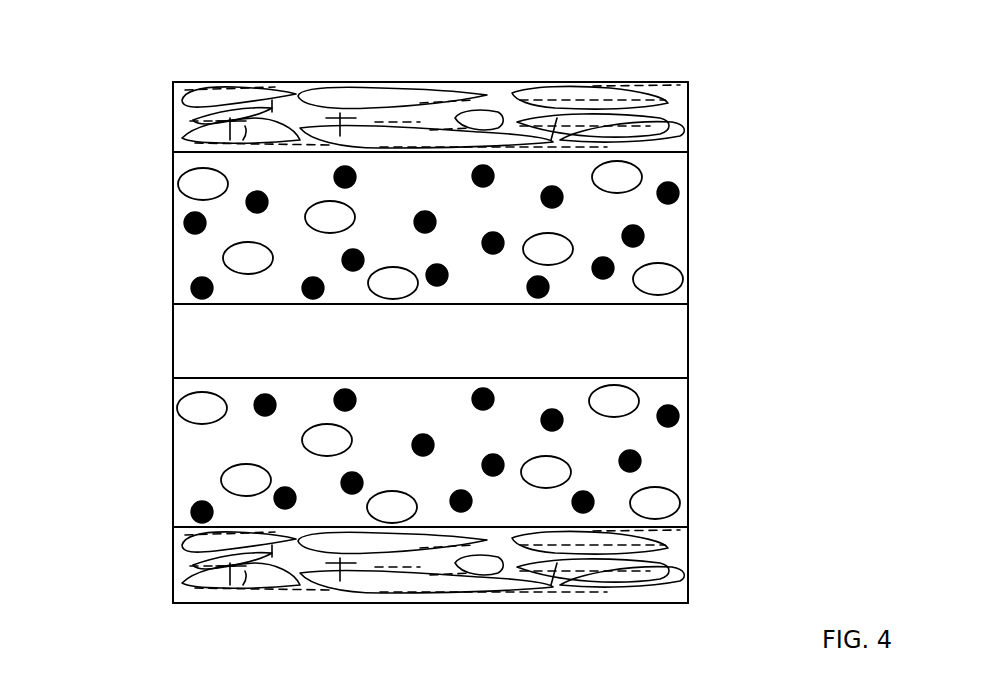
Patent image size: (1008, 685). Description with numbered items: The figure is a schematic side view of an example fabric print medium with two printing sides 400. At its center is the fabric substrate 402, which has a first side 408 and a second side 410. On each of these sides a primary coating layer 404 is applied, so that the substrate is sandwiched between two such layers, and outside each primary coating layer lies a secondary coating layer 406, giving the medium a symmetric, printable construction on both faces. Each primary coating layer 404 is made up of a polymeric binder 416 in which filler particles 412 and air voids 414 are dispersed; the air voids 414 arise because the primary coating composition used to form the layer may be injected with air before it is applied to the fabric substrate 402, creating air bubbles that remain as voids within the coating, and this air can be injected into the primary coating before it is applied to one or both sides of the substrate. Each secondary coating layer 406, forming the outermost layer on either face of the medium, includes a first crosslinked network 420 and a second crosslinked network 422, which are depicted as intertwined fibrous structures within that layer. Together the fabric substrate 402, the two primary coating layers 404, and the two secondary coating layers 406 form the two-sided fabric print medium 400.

The fabric print medium with two printing sides 400 is at (145, 62).
The fabric substrate 402 is at (440, 352).
The primary coating layer 404 is at (733, 157).
The secondary coating layer 406 is at (734, 83).
The first side 408 is at (182, 319).
The second side 410 is at (182, 365).
The filler particles 412 is at (195, 223).
The air voids 414 is at (200, 184).
The polymeric binder 416 is at (195, 260).
The first crosslinked network 420 is at (532, 90).
The second crosslinked network 422 is at (610, 88).